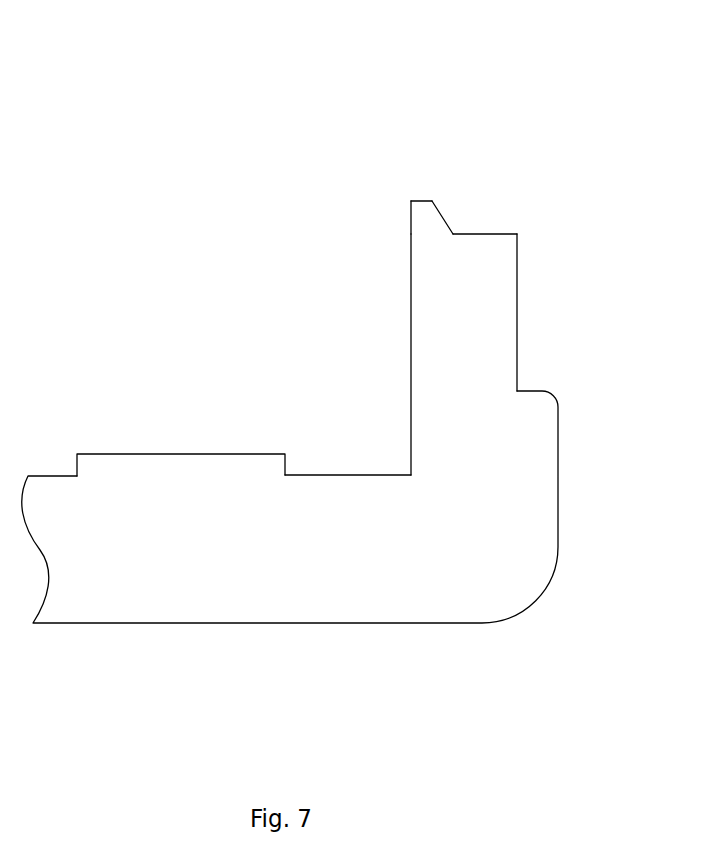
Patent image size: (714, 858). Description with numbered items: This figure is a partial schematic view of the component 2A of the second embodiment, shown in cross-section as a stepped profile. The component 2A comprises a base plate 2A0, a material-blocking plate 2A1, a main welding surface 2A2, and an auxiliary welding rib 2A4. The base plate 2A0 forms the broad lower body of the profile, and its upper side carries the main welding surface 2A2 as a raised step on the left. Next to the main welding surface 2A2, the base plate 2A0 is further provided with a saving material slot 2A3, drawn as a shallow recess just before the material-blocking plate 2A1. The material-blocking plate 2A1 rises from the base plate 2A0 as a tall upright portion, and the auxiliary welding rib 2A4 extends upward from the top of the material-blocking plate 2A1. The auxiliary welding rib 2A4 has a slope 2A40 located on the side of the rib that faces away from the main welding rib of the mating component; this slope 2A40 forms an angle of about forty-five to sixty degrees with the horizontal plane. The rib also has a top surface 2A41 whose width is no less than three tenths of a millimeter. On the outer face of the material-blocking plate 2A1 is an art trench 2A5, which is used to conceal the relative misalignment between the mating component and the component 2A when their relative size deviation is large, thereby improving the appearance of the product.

The component 2A is at (202, 110).
The base plate 2A0 is at (217, 578).
The material-blocking plate 2A1 is at (465, 337).
The main welding surface 2A2 is at (182, 454).
The saving material slot 2A3 is at (357, 475).
The auxiliary welding rib 2A4 is at (428, 223).
The slope 2A40 is at (441, 213).
The top surface 2A41 is at (423, 200).
The art trench 2A5 is at (517, 272).